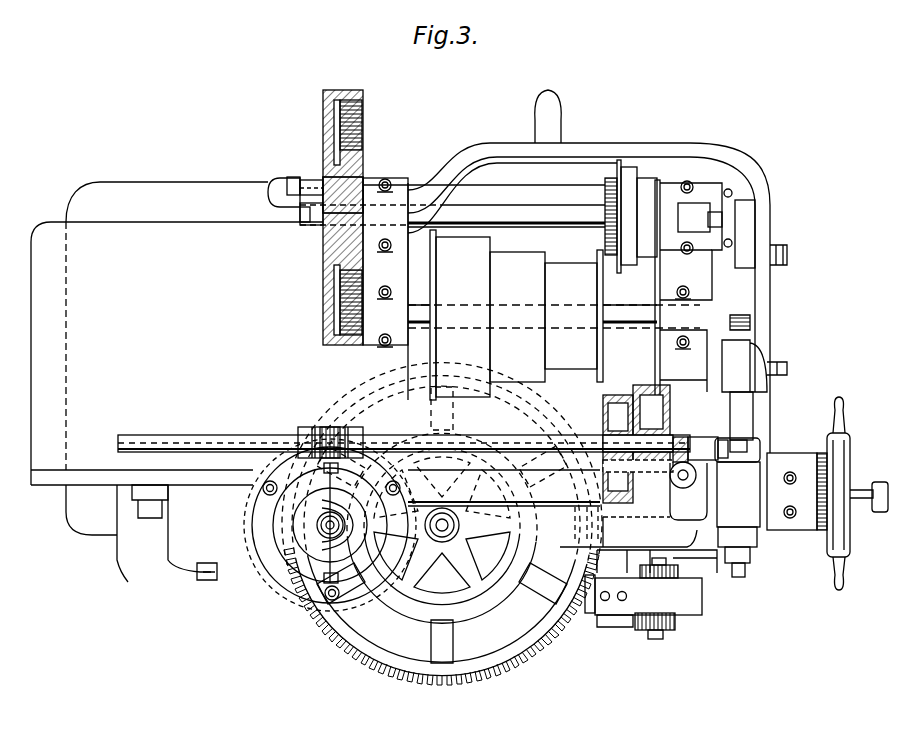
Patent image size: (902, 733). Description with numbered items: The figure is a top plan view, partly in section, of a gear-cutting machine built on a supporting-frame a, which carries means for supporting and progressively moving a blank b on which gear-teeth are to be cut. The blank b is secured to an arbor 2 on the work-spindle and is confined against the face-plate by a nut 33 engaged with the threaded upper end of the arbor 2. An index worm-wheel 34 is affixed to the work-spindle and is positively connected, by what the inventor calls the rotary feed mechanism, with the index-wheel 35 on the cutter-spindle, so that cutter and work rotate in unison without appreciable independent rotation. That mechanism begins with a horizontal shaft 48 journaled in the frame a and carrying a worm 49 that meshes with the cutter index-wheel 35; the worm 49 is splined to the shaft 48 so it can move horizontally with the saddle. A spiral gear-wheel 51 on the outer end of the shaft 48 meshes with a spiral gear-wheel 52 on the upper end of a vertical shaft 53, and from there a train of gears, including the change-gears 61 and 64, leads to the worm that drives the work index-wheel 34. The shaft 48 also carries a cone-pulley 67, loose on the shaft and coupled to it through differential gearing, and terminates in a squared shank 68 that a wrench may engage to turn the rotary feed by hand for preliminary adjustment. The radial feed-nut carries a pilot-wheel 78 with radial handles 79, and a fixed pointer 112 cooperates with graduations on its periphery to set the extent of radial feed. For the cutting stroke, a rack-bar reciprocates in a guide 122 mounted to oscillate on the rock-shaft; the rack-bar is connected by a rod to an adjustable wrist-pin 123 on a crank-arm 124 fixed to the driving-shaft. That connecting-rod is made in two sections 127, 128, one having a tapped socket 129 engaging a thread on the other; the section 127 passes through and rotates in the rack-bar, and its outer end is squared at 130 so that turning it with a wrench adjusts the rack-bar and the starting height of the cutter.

The supporting-frame a is at (193, 188).
The blank b is at (538, 528).
The arbor 2 is at (442, 528).
The nut 33 is at (469, 529).
The index worm-wheel 34 is at (522, 663).
The index-wheel 35 is at (290, 460).
The horizontal shaft 48 is at (470, 443).
The worm 49 is at (312, 425).
The spiral gear-wheel 51 is at (686, 447).
The spiral gear-wheel 52 is at (673, 490).
The vertical shaft 53 is at (694, 474).
The gear 61 is at (677, 568).
The gear 64 is at (675, 630).
The cone-pulley 67 is at (630, 394).
The squared shank 68 is at (737, 442).
The pilot-wheel 78 is at (850, 458).
The radial handles 79 is at (843, 410).
The fixed pointer 112 is at (833, 493).
The guide 122 is at (747, 515).
The wrist-pin 123 is at (786, 258).
The crank-arm 124 is at (742, 227).
The connecting-rod section 127 is at (745, 418).
The connecting-rod section 128 is at (768, 318).
The tapped socket 129 is at (727, 373).
The squared end 130 is at (748, 603).